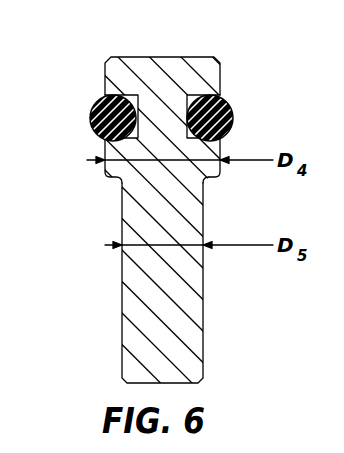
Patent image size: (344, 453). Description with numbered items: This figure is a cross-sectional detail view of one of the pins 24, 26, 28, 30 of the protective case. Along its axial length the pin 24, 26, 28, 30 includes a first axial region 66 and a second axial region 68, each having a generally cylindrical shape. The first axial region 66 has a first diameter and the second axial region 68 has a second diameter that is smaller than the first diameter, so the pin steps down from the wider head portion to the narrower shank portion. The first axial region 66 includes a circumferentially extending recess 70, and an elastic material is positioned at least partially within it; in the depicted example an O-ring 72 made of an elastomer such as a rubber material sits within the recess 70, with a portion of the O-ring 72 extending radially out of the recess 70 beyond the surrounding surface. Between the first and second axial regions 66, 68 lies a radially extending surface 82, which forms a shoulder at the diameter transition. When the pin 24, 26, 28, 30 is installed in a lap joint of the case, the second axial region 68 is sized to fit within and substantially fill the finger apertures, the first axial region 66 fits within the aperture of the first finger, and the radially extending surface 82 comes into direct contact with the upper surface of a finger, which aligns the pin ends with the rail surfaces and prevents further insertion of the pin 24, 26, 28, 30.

The pin 24 is at (172, 206).
The pin 26 is at (172, 206).
The pin 28 is at (172, 206).
The pin 30 is at (172, 206).
The first axial region 66 is at (80, 62).
The second axial region 68 is at (80, 183).
The circumferentially extending recess 70 is at (131, 93).
The O-ring 72 is at (229, 122).
The radially extending surface 82 is at (205, 180).